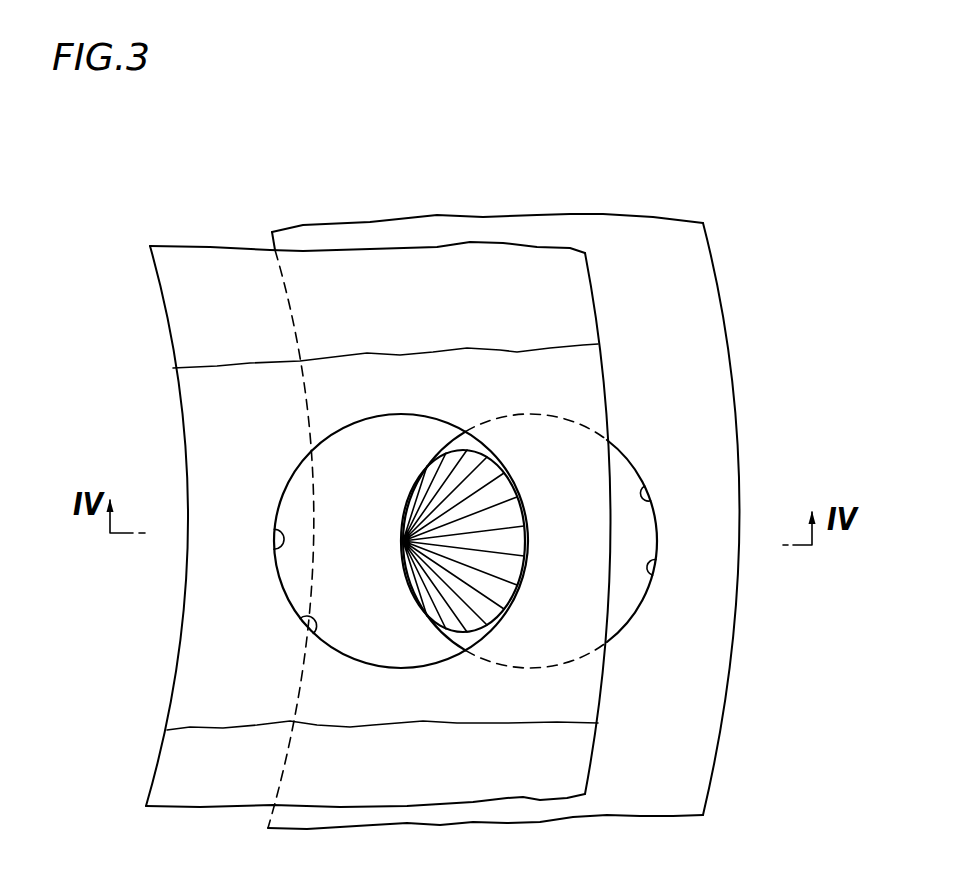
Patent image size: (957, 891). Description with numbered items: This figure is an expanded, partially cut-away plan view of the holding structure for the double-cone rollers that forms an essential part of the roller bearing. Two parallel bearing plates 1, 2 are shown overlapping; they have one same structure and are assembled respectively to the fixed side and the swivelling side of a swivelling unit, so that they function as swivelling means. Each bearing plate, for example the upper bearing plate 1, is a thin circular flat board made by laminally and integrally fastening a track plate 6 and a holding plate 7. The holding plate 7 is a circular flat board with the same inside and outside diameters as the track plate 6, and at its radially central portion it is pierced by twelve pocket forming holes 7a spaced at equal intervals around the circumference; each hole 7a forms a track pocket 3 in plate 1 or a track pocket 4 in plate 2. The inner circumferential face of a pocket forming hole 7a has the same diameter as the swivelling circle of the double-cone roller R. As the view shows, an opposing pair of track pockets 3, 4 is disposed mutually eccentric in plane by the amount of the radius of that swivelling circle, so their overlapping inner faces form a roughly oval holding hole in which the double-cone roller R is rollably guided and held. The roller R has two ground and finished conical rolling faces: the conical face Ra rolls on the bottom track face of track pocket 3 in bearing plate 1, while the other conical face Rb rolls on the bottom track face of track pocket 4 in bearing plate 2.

The bearing plate 1 is at (175, 371).
The bearing plate 2 is at (740, 412).
The track pocket 3 is at (274, 555).
The track pocket 4 is at (656, 571).
The track plate 6 is at (186, 308).
The holding plate 7 is at (203, 422).
The pocket forming hole 7a is at (300, 613).
The double-cone roller R is at (464, 448).
The conical face Ra is at (505, 490).
The conical face Rb is at (507, 628).